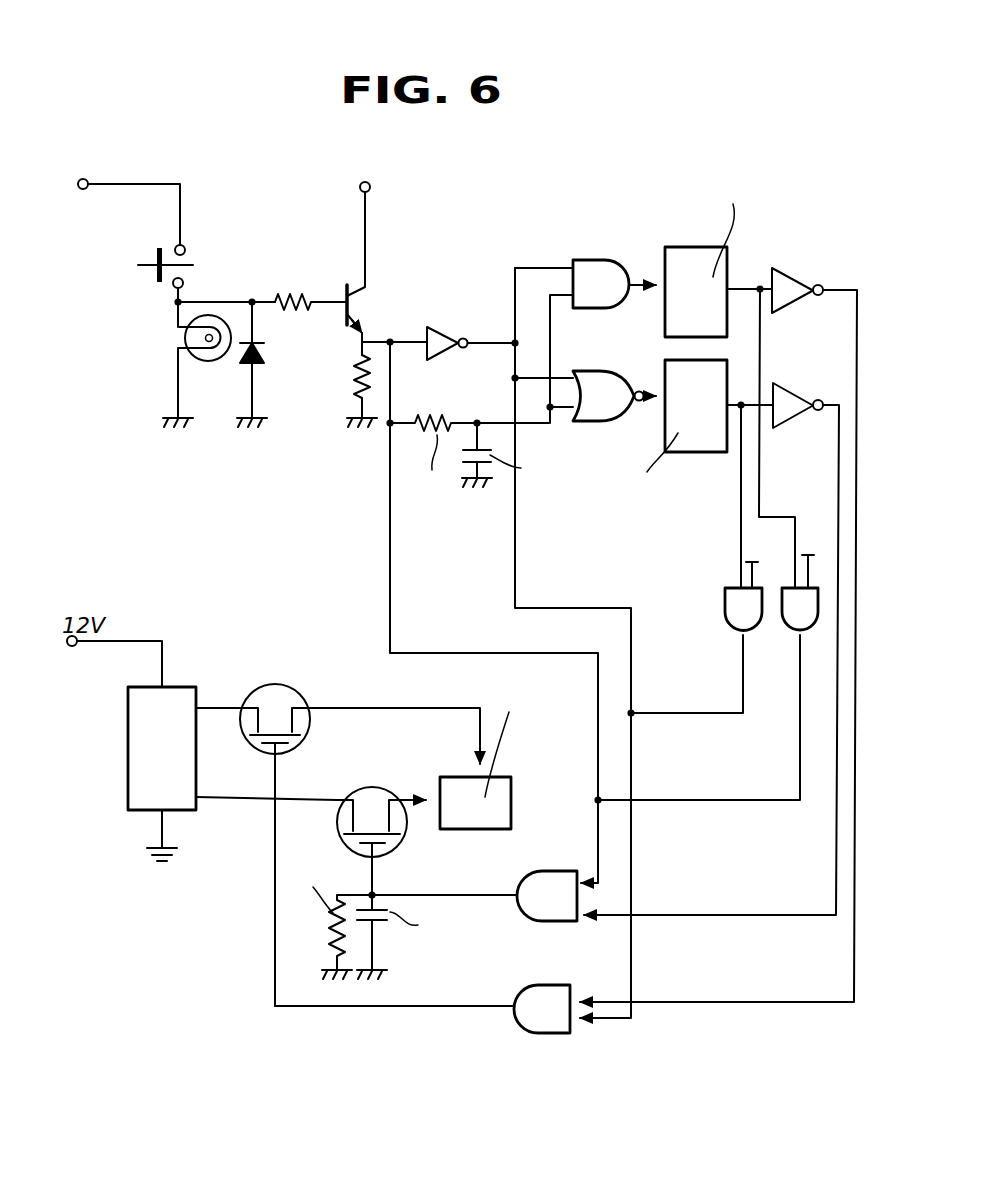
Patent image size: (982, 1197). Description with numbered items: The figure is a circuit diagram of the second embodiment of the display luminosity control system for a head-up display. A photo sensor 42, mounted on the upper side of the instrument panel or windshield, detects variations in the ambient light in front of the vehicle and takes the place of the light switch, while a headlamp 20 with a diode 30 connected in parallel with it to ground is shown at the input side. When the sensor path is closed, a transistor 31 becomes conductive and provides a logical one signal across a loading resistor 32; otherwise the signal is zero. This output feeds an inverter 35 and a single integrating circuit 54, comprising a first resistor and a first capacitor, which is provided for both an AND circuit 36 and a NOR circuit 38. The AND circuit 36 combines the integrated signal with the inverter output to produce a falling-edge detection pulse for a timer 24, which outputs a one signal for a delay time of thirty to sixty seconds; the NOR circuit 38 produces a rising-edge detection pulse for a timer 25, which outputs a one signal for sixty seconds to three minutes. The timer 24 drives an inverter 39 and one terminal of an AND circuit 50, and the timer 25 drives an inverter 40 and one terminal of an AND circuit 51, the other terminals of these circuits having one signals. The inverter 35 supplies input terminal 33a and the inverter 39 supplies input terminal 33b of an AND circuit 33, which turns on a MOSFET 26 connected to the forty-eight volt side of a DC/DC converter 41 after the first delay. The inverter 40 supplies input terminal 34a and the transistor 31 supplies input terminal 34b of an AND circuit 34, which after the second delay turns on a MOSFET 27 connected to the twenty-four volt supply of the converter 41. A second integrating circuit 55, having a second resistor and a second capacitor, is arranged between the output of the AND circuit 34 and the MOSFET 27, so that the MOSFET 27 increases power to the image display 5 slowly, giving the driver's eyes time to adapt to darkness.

The photo sensor 42 is at (150, 265).
The headlamp 20 is at (165, 340).
The diode 30 is at (265, 357).
The transistor 31 is at (336, 266).
The loading resistor 32 is at (345, 378).
The inverter 35 is at (450, 327).
The AND circuit 36 is at (610, 258).
The timer 24 is at (698, 247).
The timer 25 is at (692, 452).
The NOR circuit 38 is at (613, 421).
The inverter 39 is at (794, 278).
The inverter 40 is at (788, 423).
The AND circuit 51 is at (727, 617).
The AND circuit 50 is at (793, 622).
The integrating circuit 54 is at (446, 504).
The DC/DC converter 41 is at (100, 772).
The MOSFET 26 is at (275, 676).
The MOSFET 27 is at (368, 776).
The image display 5 is at (472, 829).
The integrating circuit 55 is at (404, 945).
The AND circuit 34 is at (550, 871).
The input terminal 34a is at (578, 921).
The input terminal 34b is at (582, 877).
The AND circuit 33 is at (538, 984).
The input terminal 33a is at (572, 1027).
The input terminal 33b is at (573, 994).